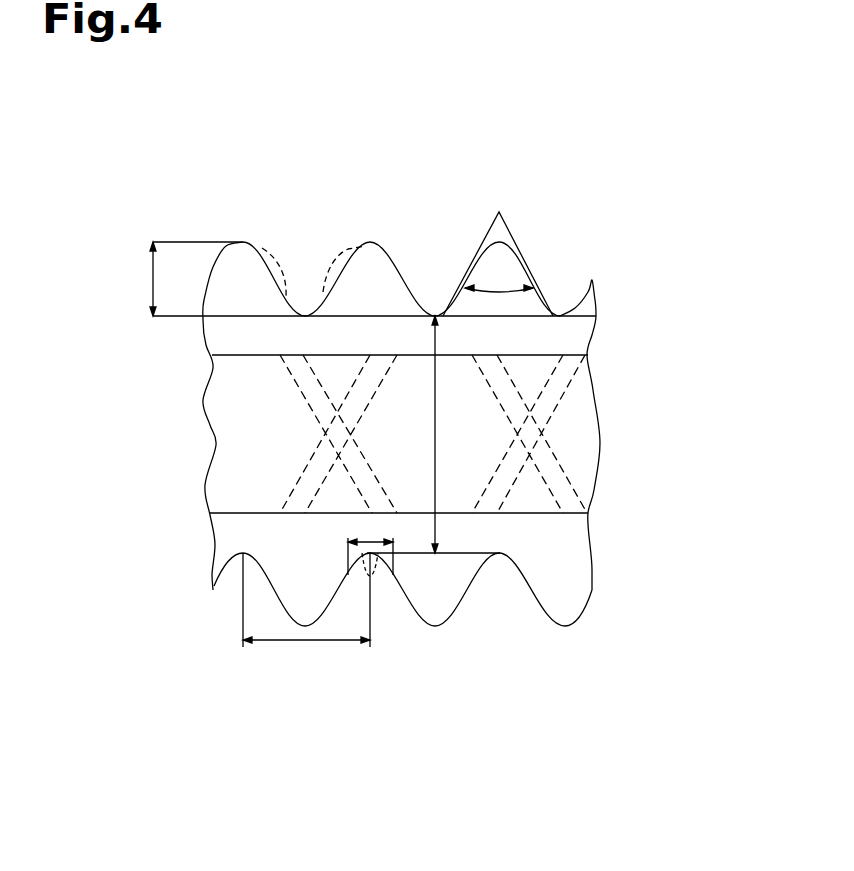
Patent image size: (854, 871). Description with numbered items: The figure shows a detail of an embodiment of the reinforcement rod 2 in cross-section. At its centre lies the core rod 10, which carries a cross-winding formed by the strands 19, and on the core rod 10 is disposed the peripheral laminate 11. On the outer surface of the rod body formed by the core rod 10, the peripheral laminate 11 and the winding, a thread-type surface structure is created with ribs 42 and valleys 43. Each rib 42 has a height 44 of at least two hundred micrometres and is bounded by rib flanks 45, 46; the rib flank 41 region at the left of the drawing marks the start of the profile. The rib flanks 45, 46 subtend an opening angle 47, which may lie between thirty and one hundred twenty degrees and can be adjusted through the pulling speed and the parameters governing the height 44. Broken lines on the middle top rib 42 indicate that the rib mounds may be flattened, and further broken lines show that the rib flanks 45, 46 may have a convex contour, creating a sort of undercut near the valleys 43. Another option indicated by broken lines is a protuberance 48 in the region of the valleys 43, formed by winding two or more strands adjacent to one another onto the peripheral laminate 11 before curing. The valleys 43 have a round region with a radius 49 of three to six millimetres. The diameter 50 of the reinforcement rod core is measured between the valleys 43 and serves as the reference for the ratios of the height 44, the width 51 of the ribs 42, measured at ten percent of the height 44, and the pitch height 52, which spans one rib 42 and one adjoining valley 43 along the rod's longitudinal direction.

The reinforcement rod 2 is at (633, 264).
The core rod 10 is at (528, 383).
The peripheral laminate 11 is at (506, 267).
The strands 19 is at (283, 378).
The wave flank 41 is at (213, 263).
The ribs 42 is at (246, 238).
The valleys 43 is at (305, 300).
The height 44 is at (152, 284).
The rib flank 45 is at (406, 264).
The rib flank 46 is at (460, 266).
The opening angle 47 is at (500, 287).
The protuberance 48 is at (378, 578).
The radius 49 is at (500, 560).
The diameter 50 is at (442, 437).
The width 51 is at (362, 535).
The pitch height 52 is at (302, 652).